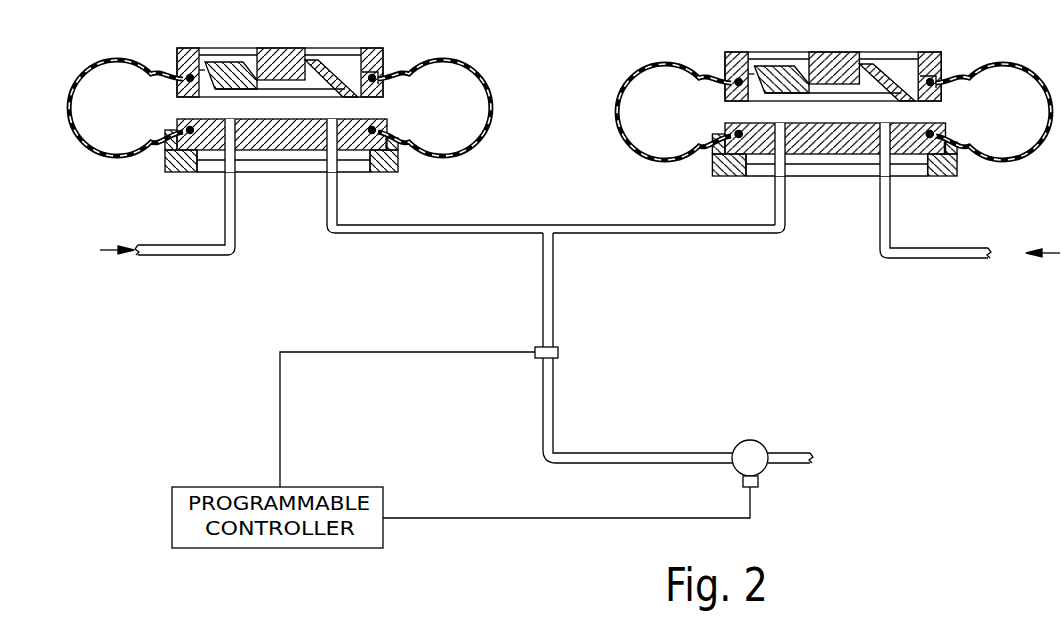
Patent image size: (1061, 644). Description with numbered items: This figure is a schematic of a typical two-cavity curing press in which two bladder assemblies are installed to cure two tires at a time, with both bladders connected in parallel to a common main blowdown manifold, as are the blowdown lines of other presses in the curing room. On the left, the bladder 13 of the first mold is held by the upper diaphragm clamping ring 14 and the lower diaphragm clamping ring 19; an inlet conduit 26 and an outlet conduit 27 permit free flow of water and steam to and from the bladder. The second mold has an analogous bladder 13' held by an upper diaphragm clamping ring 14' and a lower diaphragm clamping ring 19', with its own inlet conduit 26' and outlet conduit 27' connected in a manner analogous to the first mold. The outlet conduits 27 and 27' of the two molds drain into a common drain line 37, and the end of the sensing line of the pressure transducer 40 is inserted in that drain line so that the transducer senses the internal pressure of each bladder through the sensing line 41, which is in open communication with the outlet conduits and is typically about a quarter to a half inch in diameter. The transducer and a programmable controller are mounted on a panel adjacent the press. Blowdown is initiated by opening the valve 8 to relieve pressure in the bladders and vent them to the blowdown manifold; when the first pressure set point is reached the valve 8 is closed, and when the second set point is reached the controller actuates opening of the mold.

The valve 8 is at (763, 444).
The bladder 13 is at (434, 85).
The bladder 13' is at (993, 92).
The upper diaphragm clamping ring 14 is at (399, 95).
The upper diaphragm clamping ring 14' is at (960, 95).
The lower diaphragm clamping ring 19 is at (126, 108).
The lower diaphragm clamping ring 19' is at (676, 112).
The inlet conduit 26 is at (167, 187).
The inlet conduit 26' is at (970, 190).
The outlet conduit 27 is at (551, 176).
The outlet conduit 27' is at (669, 178).
The drain line 37 is at (553, 280).
The pressure transducer 40 is at (537, 358).
The sensing line 41 is at (345, 352).